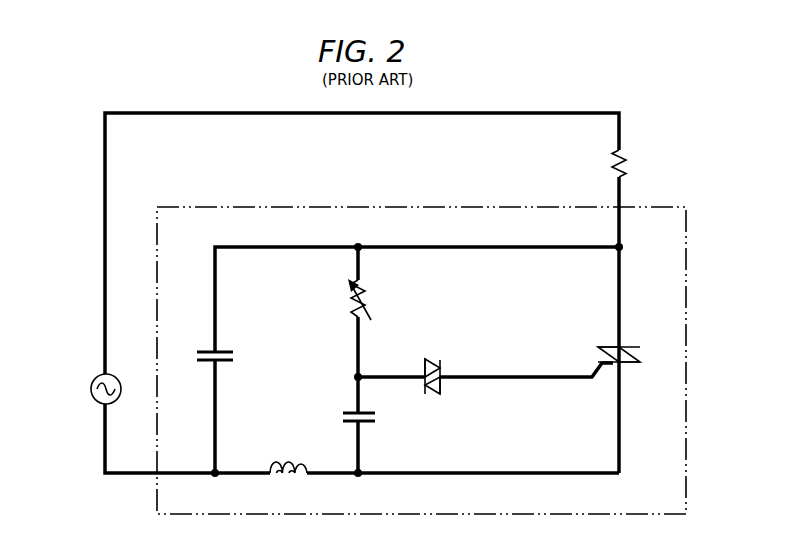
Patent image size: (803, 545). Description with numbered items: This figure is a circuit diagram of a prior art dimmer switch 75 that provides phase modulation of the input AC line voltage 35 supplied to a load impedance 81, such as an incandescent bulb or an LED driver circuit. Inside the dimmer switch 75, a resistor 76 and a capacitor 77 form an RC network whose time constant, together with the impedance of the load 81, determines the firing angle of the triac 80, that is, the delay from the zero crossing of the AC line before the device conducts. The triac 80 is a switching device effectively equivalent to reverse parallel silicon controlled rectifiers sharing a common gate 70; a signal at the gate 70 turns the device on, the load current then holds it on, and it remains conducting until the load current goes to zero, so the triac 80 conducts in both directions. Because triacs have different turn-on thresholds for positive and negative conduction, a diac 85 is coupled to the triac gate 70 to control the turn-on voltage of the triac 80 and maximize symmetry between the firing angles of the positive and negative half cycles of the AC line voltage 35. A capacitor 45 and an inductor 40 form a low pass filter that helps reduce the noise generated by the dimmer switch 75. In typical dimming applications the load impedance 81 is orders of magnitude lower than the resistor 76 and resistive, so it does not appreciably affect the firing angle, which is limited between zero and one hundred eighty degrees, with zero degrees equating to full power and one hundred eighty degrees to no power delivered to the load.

The load impedance Z_LOAD 81 is at (626, 150).
The dimmer switch 75 is at (193, 207).
The AC line voltage 35 is at (115, 400).
The capacitor C2 45 is at (226, 352).
The resistor R1 76 is at (372, 300).
The diac 85 is at (428, 358).
The gate 70 is at (592, 381).
The triac 80 is at (607, 347).
The inductor L1 40 is at (293, 481).
The capacitor C1 77 is at (366, 424).